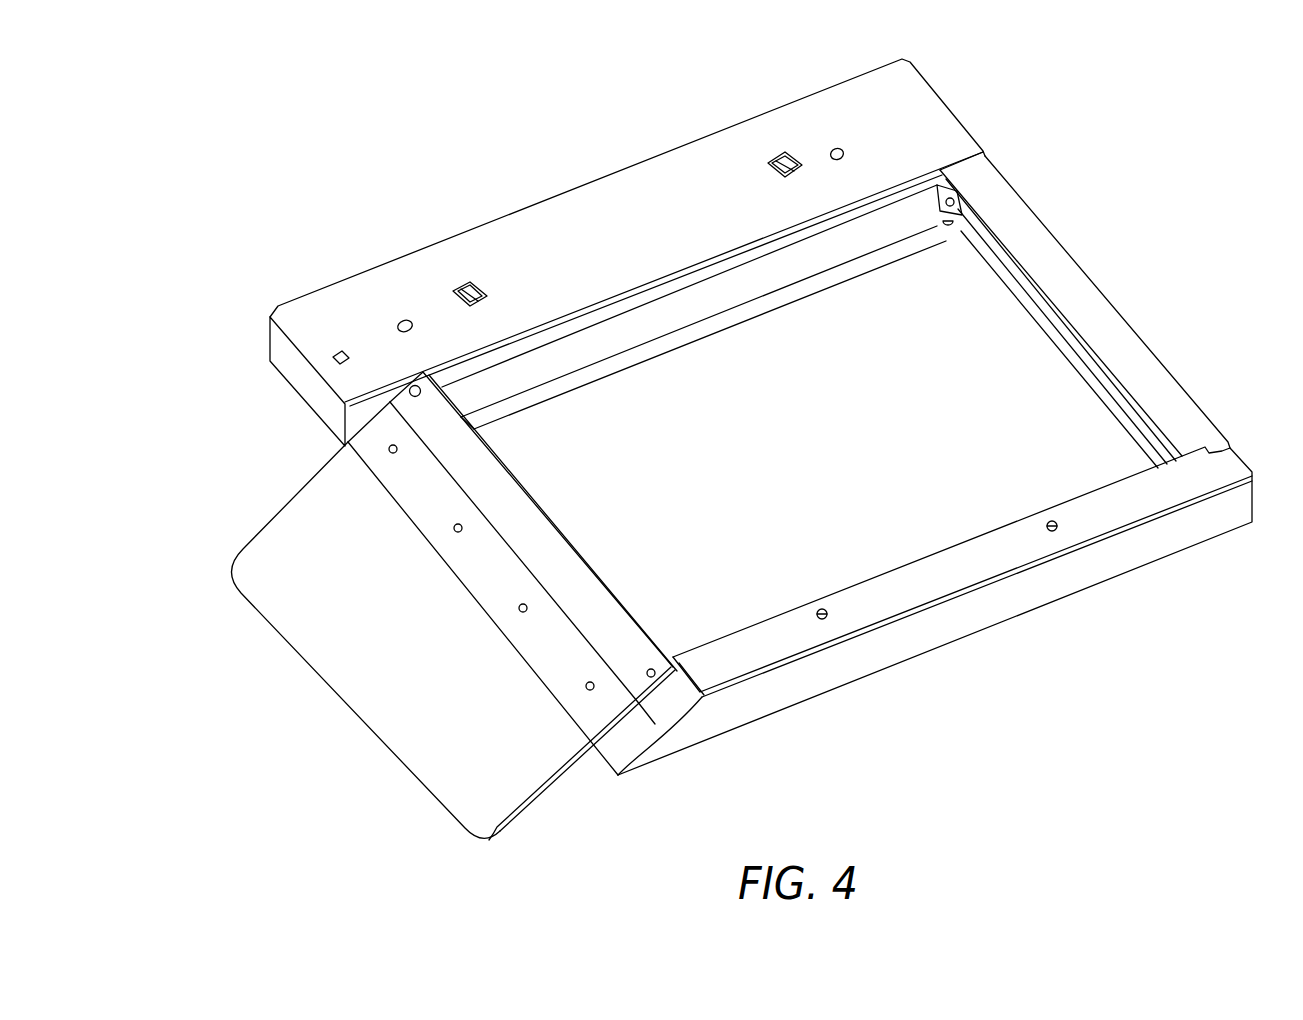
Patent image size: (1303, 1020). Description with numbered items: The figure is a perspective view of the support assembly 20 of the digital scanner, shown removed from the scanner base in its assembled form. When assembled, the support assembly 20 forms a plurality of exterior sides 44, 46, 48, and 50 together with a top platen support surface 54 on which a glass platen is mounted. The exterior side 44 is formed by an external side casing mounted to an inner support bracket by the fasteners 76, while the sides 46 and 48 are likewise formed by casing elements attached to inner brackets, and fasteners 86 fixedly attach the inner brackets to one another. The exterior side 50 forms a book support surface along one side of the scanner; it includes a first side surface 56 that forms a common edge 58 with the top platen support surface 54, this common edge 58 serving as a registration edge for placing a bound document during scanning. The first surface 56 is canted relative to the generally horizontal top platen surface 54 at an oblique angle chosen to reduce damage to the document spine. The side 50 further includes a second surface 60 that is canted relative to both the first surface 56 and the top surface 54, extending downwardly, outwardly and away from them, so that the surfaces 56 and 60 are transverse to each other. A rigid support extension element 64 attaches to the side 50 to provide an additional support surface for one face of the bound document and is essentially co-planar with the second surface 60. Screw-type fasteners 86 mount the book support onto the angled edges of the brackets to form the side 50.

The support assembly 20 is at (761, 417).
The exterior side 44 is at (935, 611).
The exterior side 46 is at (1181, 387).
The exterior side 48 is at (572, 191).
The exterior side 50 is at (454, 586).
The top platen support surface 54 is at (900, 305).
The first side surface 56 is at (512, 553).
The common edge 58 is at (522, 504).
The second surface 60 is at (569, 668).
The rigid support extension element 64 is at (559, 783).
The fasteners 76 is at (822, 609).
The fasteners 86 is at (409, 388).